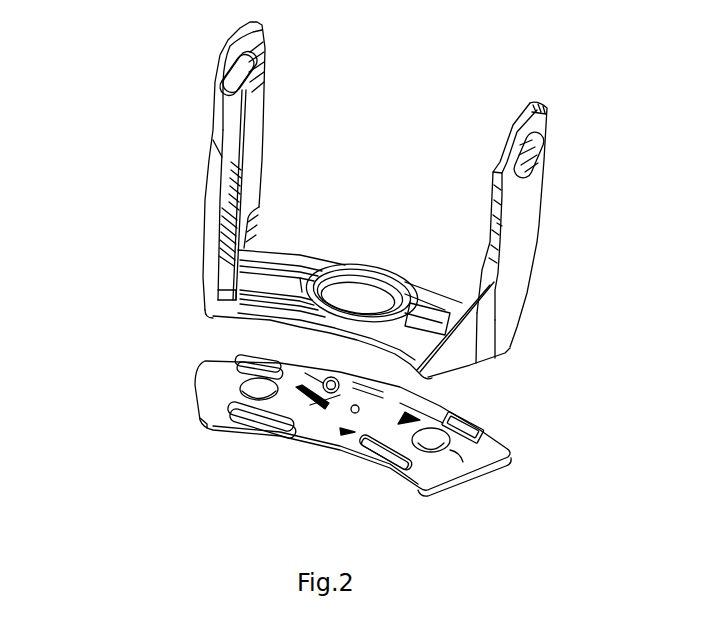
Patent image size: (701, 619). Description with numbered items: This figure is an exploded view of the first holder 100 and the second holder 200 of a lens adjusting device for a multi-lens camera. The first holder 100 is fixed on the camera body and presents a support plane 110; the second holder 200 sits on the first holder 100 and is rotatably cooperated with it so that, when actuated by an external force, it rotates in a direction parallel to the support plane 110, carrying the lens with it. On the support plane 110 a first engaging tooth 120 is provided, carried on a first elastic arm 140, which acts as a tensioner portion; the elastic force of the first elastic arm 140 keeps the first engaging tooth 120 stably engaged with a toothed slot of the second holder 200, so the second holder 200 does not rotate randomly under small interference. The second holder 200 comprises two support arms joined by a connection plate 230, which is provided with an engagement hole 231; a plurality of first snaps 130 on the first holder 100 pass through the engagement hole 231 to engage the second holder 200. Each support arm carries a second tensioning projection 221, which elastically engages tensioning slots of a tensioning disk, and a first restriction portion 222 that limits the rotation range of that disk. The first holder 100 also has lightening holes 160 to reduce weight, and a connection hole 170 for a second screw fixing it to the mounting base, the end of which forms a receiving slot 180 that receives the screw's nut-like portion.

The first holder 100 is at (198, 393).
The support plane 110 is at (203, 422).
The first engaging tooth 120 is at (440, 405).
The first snaps 130 is at (485, 468).
The first elastic arm 140 is at (320, 402).
The lightening holes 160 is at (250, 372).
The connection hole 170 is at (450, 445).
The receiving slot 180 is at (447, 448).
The second holder 200 is at (208, 263).
The second tensioning projection 221 is at (248, 130).
The first restriction portion 222 is at (250, 65).
The connection plate 230 is at (293, 260).
The engagement hole 231 is at (370, 292).